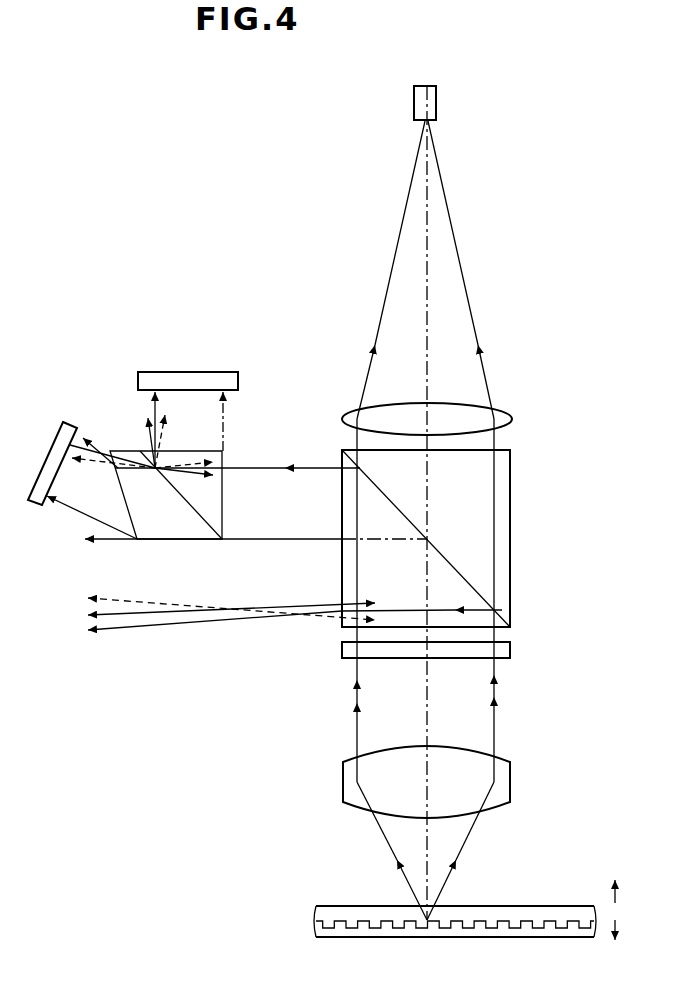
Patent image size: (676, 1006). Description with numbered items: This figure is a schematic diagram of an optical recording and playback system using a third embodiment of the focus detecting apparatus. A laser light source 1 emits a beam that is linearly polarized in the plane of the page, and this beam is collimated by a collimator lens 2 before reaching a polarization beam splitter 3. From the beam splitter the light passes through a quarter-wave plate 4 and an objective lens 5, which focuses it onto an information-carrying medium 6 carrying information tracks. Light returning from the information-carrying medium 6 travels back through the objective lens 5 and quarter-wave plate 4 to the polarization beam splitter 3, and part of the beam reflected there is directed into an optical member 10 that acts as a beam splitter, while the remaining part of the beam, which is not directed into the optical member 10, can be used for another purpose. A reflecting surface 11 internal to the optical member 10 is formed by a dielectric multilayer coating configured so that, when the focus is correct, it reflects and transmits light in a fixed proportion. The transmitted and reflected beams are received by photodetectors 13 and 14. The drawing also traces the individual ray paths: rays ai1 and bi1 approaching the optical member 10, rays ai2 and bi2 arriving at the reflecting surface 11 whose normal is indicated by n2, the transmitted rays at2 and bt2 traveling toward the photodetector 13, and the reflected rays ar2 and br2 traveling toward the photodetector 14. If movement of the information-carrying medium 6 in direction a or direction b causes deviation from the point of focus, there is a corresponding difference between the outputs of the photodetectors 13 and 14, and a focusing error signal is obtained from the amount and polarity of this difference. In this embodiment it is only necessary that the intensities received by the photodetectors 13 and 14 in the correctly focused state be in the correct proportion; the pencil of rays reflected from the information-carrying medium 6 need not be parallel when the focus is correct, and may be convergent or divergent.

The laser light source 1 is at (437, 99).
The collimator lens 2 is at (512, 417).
The polarization beam splitter 3 is at (452, 560).
The quarter-wave plate 4 is at (512, 648).
The objective lens 5 is at (512, 780).
The information-carrying medium 6 is at (505, 930).
The optical member 10 is at (225, 520).
The reflecting surface 11 is at (195, 512).
The photodetector 13 is at (67, 420).
The photodetector 14 is at (138, 372).
The direction a is at (626, 894).
The direction b is at (626, 941).
The normal of reflecting surface n2 is at (90, 448).
The incident light beam a ai1 is at (367, 603).
The incident light beam b bi1 is at (378, 624).
The incident light beam a on prism ai2 is at (214, 478).
The incident light beam b on prism bi2 is at (224, 445).
The transmitted light beam a at2 is at (84, 436).
The transmitted light beam b bt2 is at (80, 465).
The reflected light beam a ar2 is at (148, 418).
The reflected light beam b br2 is at (166, 424).